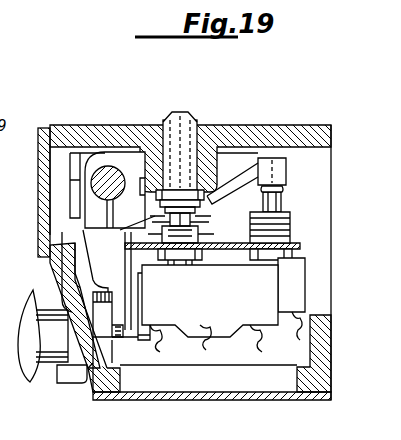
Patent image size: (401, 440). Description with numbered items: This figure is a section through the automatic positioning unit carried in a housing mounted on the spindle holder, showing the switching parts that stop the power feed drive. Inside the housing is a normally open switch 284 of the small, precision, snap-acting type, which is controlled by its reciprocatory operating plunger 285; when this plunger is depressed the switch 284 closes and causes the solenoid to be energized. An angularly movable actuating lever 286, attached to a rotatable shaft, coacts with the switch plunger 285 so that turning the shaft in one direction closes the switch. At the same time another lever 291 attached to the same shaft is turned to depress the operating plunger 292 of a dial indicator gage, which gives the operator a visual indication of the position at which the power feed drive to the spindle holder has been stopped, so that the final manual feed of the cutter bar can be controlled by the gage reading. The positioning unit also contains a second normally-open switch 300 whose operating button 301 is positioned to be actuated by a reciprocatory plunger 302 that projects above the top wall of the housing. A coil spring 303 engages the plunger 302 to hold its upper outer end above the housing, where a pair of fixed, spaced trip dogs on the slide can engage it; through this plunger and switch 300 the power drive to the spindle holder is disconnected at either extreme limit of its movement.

The normally open switch 284 is at (293, 282).
The reciprocatory operating plunger 285 is at (272, 198).
The actuating lever 286 is at (266, 172).
The lever 291 is at (143, 355).
The operating plunger 292 is at (103, 343).
The normally-open switch 300 is at (205, 320).
The operating button 301 is at (192, 209).
The reciprocatory plunger 302 is at (181, 127).
The coil spring 303 is at (193, 229).